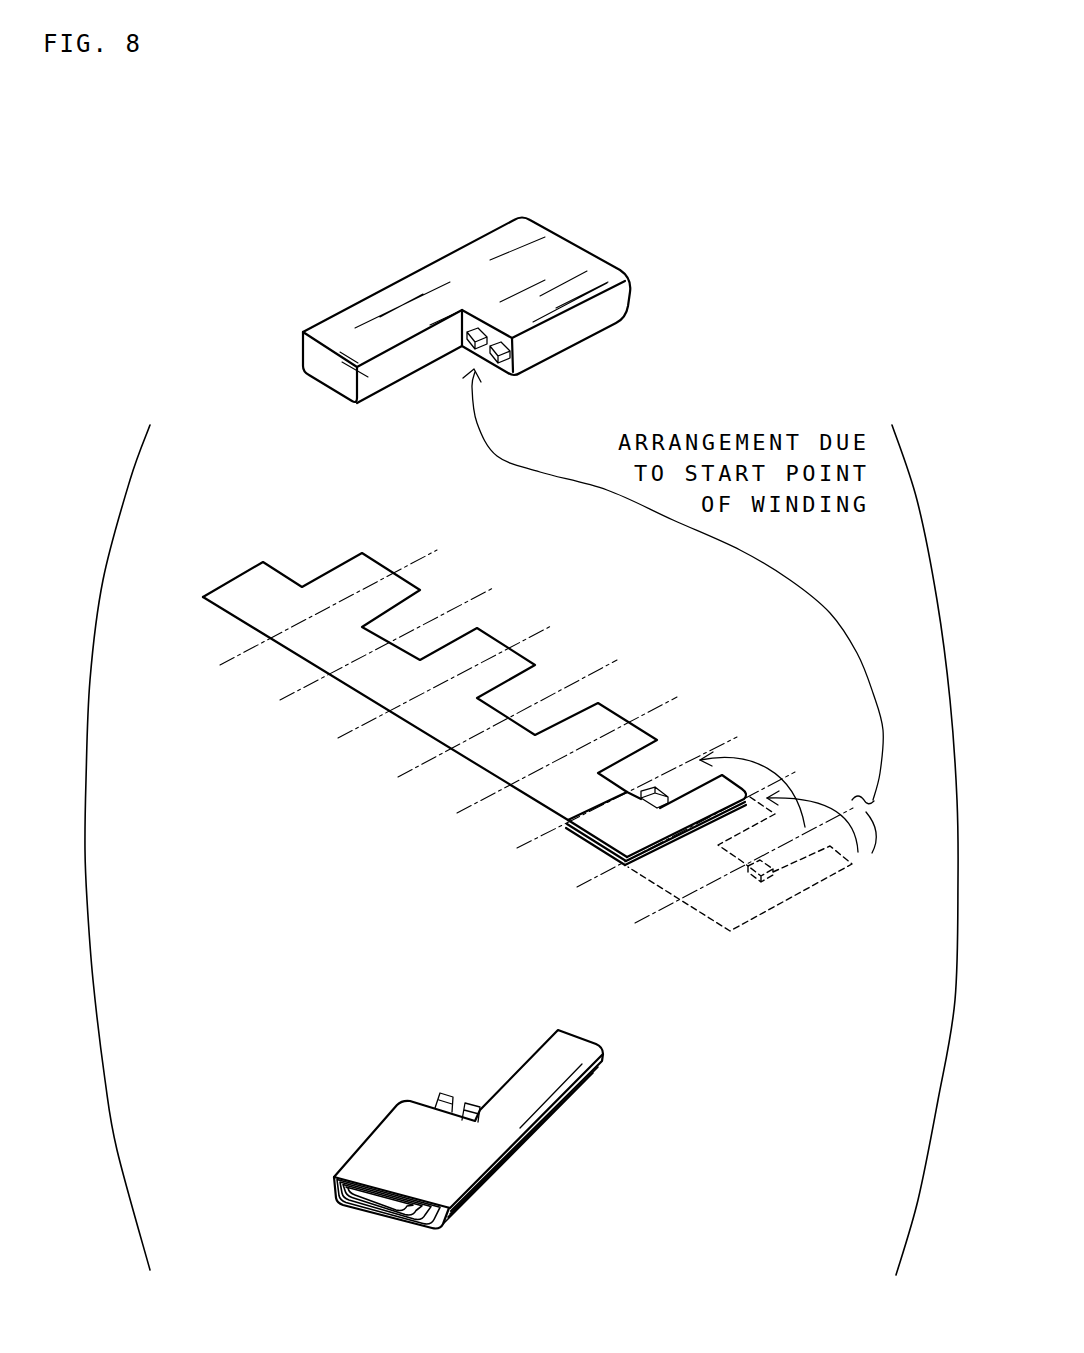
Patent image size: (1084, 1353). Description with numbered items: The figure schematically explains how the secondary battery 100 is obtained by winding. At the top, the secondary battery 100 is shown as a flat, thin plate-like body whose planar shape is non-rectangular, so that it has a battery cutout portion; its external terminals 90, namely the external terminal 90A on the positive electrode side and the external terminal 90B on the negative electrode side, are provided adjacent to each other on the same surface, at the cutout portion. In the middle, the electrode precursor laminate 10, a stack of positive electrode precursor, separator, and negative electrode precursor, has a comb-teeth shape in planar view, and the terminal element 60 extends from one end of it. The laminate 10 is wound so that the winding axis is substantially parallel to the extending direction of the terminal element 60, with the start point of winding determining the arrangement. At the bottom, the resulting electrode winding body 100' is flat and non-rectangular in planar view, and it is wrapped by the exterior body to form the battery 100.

The secondary battery 100 is at (415, 263).
The external terminals 90 is at (533, 182).
The external terminal on the positive electrode side 90A is at (468, 330).
The external terminal on the negative electrode side 90B is at (511, 356).
The electrode precursor laminate 10 is at (478, 640).
The terminal element 60 is at (650, 790).
The electrode winding body 100' is at (448, 1119).